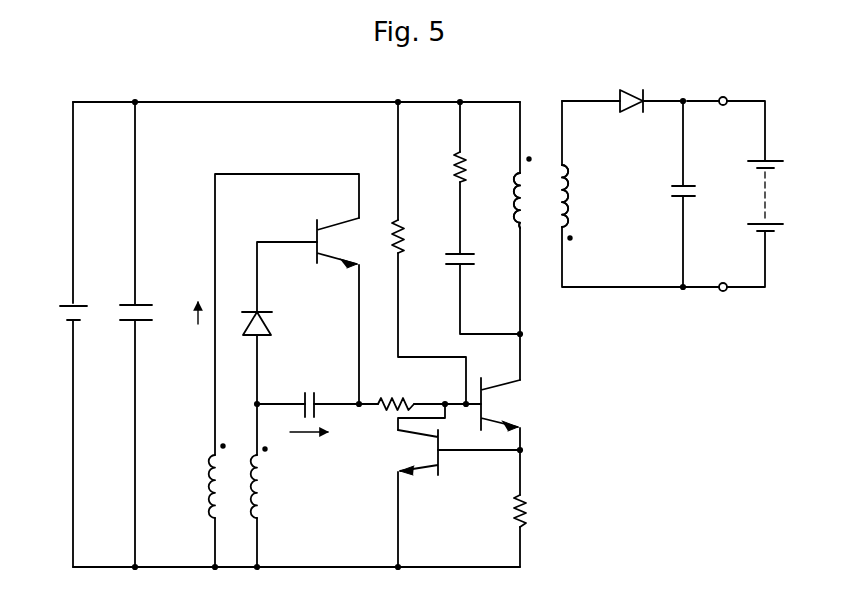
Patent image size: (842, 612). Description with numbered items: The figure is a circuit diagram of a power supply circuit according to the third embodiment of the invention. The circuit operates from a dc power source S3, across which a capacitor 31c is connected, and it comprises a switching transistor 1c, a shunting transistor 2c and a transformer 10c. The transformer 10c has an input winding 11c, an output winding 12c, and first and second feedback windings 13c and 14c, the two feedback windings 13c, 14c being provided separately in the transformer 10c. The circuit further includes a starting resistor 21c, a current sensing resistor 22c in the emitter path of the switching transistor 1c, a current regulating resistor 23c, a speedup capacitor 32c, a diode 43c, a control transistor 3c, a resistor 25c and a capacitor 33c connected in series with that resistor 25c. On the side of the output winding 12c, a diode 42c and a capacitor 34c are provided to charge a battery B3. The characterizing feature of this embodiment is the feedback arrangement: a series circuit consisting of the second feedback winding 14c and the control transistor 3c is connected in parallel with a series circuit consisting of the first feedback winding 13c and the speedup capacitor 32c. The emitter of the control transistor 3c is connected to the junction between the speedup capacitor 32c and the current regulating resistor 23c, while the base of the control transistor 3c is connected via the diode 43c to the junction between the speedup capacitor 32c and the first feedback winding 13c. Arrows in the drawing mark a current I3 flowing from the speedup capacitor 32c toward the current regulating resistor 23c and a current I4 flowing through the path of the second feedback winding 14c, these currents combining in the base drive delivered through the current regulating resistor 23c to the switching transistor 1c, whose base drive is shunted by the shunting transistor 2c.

The dc power source S3 is at (65, 306).
The capacitor 31c is at (138, 312).
The current I4 is at (193, 331).
The diode 43c is at (270, 322).
The speedup capacitor 32c is at (306, 393).
The current I3 is at (309, 449).
The second feedback winding 14c is at (208, 496).
The first feedback winding 13c is at (263, 492).
The control transistor 3c is at (340, 235).
The starting resistor 21c is at (415, 229).
The resistor 25c is at (470, 161).
The input winding 11c is at (514, 198).
The capacitor 33c is at (462, 259).
The current regulating resistor 23c is at (396, 396).
The switching transistor 1c is at (505, 401).
The shunting transistor 2c is at (408, 451).
The current sensing resistor 22c is at (527, 512).
The transformer 10c is at (544, 175).
The diode 42c is at (623, 92).
The output winding 12c is at (572, 201).
The capacitor 34c is at (695, 190).
The battery B3 is at (770, 194).